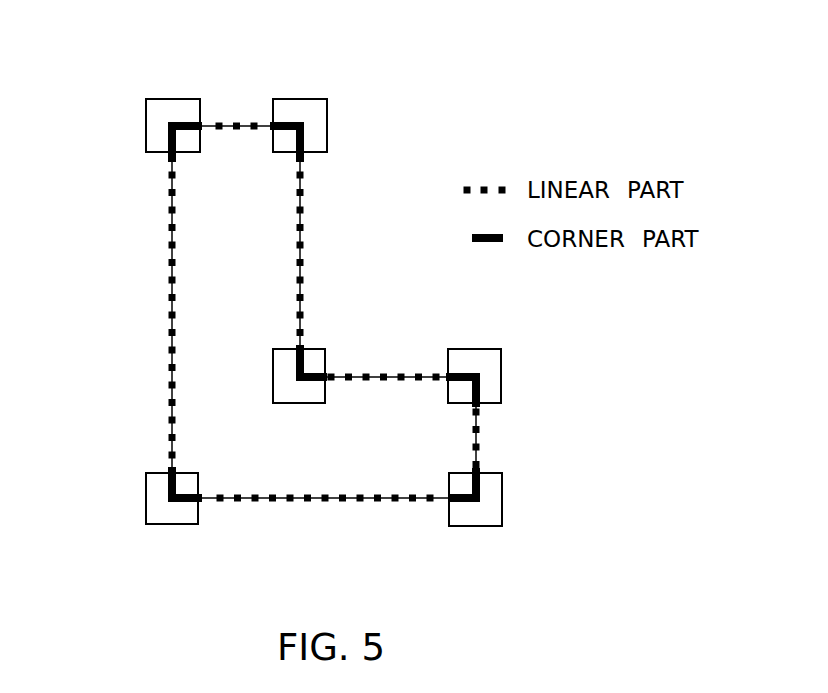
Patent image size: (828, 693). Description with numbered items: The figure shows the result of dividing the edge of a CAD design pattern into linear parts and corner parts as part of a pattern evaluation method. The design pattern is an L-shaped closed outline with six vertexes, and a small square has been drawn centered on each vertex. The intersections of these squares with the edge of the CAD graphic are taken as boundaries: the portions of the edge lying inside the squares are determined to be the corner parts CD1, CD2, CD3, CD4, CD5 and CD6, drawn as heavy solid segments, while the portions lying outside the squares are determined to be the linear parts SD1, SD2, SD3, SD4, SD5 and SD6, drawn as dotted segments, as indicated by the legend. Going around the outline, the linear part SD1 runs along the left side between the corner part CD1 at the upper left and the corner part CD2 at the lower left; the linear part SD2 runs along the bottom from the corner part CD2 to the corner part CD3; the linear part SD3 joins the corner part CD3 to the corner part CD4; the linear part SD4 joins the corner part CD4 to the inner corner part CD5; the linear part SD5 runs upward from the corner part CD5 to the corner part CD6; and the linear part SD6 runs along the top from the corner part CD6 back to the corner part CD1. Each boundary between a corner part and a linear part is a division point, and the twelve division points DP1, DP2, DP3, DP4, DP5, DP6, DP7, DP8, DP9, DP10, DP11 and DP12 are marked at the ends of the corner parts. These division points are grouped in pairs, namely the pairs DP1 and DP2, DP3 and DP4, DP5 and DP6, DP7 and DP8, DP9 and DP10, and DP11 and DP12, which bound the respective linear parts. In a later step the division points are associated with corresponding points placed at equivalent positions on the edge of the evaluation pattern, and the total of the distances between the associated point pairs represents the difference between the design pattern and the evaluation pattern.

The corner part CD1 is at (188, 122).
The corner part CD2 is at (183, 502).
The corner part CD3 is at (462, 505).
The corner part CD4 is at (480, 385).
The corner part CD5 is at (310, 373).
The corner part CD6 is at (305, 127).
The linear part SD1 is at (170, 240).
The linear part SD2 is at (322, 500).
The linear part SD3 is at (480, 445).
The linear part SD4 is at (400, 372).
The linear part SD5 is at (303, 240).
The linear part SD6 is at (220, 124).
The division point DP1 is at (172, 161).
The division point DP2 is at (170, 470).
The division point DP3 is at (203, 502).
The division point DP4 is at (430, 500).
The division point DP5 is at (480, 462).
The division point DP6 is at (478, 410).
The division point DP7 is at (440, 374).
The division point DP8 is at (330, 376).
The division point DP9 is at (296, 347).
The division point DP10 is at (304, 160).
The division point DP11 is at (268, 122).
The division point DP12 is at (203, 122).